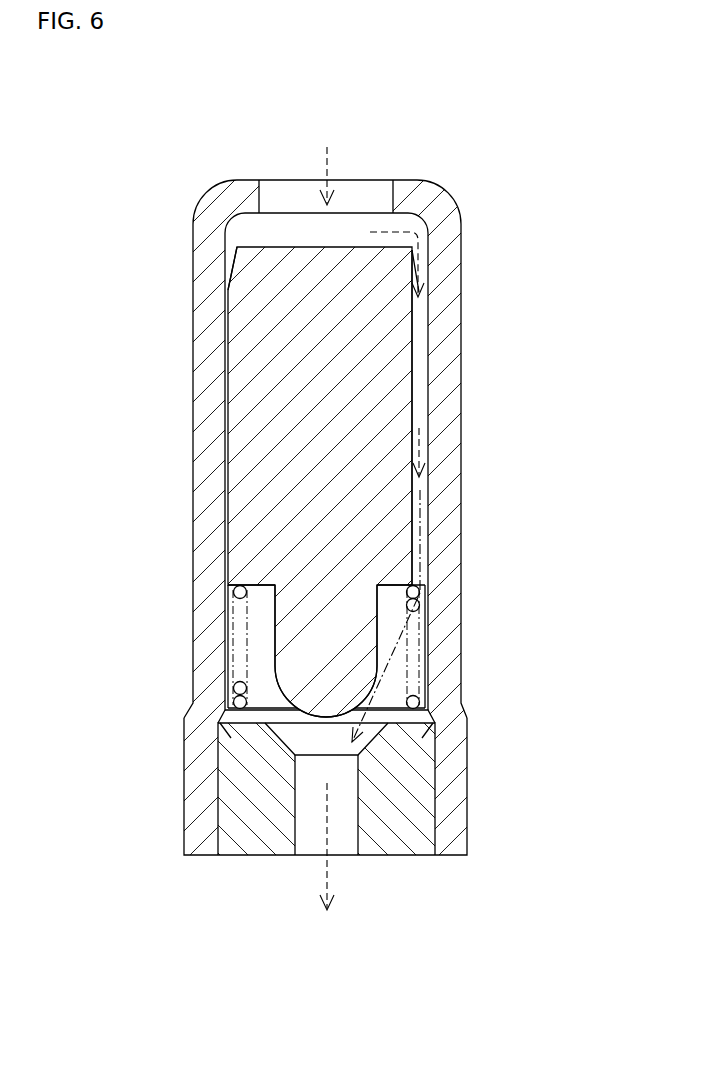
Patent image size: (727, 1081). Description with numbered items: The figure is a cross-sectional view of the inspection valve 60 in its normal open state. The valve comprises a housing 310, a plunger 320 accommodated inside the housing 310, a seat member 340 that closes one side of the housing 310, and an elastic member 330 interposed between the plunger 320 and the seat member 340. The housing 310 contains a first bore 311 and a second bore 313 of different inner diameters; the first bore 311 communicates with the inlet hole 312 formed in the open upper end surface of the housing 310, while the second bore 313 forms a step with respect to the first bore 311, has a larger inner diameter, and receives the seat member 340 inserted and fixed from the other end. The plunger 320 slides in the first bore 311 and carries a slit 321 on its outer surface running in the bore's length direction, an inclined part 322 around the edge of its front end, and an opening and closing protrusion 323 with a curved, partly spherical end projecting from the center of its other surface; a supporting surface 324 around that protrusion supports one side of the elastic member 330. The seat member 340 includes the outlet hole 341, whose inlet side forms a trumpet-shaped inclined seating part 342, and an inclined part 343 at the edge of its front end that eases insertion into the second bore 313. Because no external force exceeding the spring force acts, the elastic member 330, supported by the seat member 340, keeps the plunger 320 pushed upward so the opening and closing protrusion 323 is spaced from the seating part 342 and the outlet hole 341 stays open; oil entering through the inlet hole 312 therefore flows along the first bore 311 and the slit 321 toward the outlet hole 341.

The inspection valve 60 is at (437, 1047).
The housing 310 is at (438, 398).
The first bore 311 is at (432, 506).
The inlet hole 312 is at (393, 198).
The second bore 313 is at (438, 817).
The plunger 320 is at (392, 363).
The slit 321 is at (428, 315).
The inclined part 322 is at (233, 263).
The opening and closing protrusion 323 is at (290, 638).
The supporting surface 324 is at (262, 592).
The elastic member 330 is at (237, 687).
The seat member 340 is at (418, 767).
The outlet hole 341 is at (304, 827).
The seating part 342 is at (283, 746).
The inclined part 343 is at (228, 728).